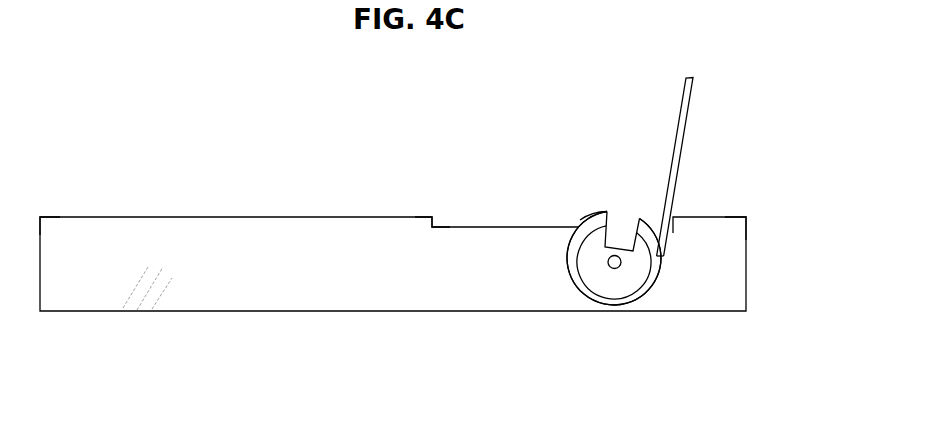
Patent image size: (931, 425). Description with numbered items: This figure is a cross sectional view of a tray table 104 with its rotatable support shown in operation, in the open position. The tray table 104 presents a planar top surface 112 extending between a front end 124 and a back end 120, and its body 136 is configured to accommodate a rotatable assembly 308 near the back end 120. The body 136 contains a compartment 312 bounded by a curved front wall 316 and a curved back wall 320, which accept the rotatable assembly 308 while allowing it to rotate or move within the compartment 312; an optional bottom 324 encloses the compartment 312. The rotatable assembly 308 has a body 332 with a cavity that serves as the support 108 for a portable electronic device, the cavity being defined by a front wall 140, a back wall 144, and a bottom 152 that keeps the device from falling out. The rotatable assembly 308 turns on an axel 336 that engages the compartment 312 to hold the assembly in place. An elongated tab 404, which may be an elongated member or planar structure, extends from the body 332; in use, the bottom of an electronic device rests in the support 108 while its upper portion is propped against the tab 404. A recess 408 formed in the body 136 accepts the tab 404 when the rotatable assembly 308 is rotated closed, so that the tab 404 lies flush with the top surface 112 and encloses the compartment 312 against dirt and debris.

The tray table 104 is at (462, 357).
The support 108 is at (640, 216).
The top surface 112 is at (142, 209).
The back end 120 is at (746, 217).
The front end 124 is at (41, 216).
The body 136 is at (113, 288).
The front wall 140 is at (605, 236).
The back wall 144 is at (663, 262).
The bottom 152 is at (633, 251).
The rotatable assembly 308 is at (575, 204).
The compartment 312 is at (570, 226).
The curved front wall 316 is at (568, 244).
The curved back wall 320 is at (666, 257).
The bottom 324 is at (613, 306).
The body 332 is at (584, 218).
The axel 336 is at (610, 267).
The elongated tab 404 is at (692, 77).
The recess 408 is at (453, 227).